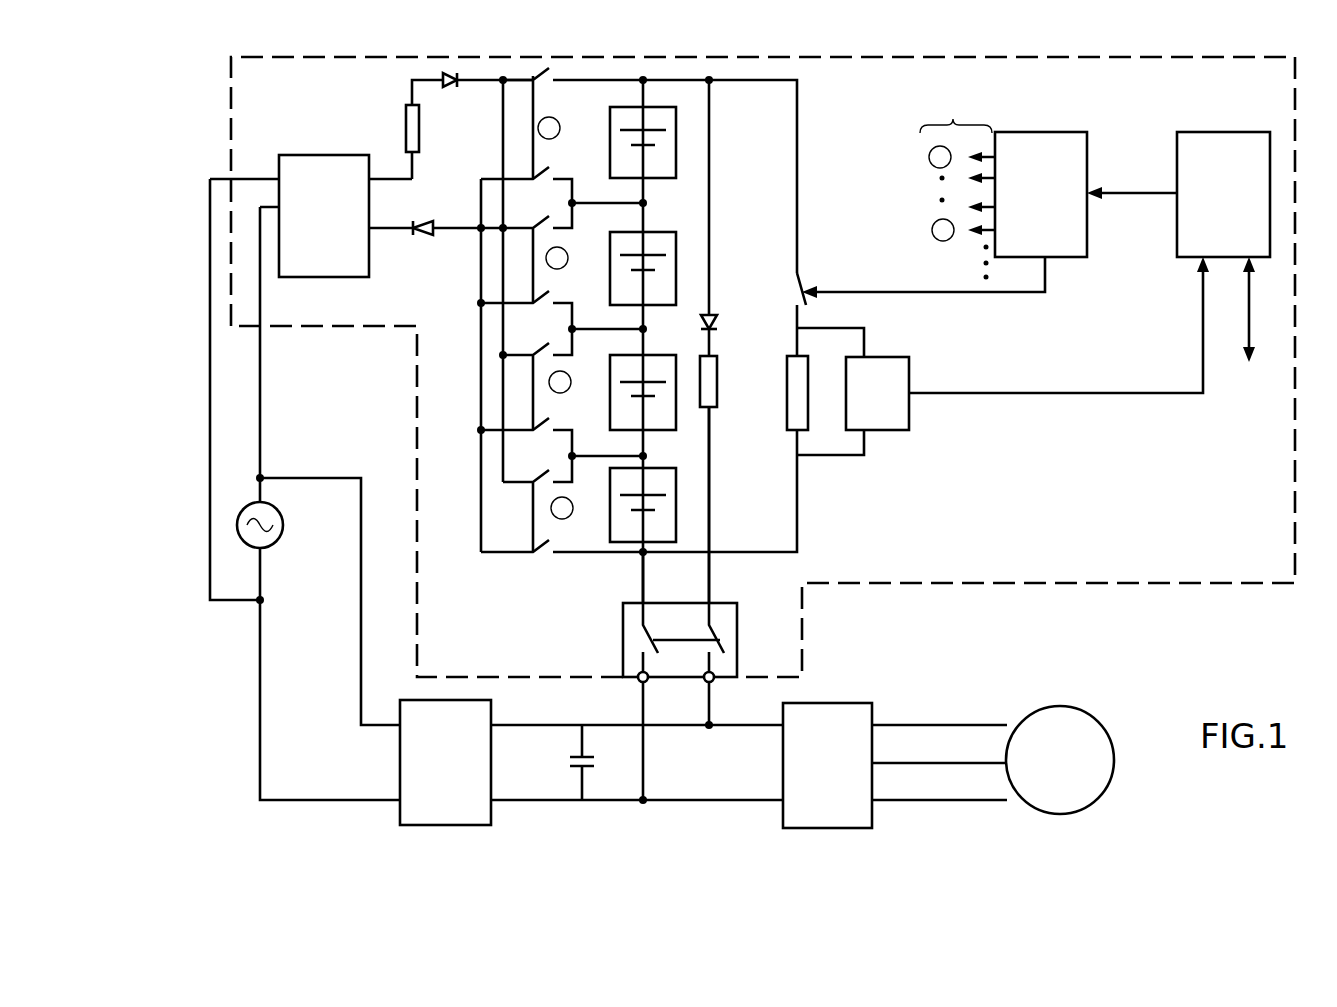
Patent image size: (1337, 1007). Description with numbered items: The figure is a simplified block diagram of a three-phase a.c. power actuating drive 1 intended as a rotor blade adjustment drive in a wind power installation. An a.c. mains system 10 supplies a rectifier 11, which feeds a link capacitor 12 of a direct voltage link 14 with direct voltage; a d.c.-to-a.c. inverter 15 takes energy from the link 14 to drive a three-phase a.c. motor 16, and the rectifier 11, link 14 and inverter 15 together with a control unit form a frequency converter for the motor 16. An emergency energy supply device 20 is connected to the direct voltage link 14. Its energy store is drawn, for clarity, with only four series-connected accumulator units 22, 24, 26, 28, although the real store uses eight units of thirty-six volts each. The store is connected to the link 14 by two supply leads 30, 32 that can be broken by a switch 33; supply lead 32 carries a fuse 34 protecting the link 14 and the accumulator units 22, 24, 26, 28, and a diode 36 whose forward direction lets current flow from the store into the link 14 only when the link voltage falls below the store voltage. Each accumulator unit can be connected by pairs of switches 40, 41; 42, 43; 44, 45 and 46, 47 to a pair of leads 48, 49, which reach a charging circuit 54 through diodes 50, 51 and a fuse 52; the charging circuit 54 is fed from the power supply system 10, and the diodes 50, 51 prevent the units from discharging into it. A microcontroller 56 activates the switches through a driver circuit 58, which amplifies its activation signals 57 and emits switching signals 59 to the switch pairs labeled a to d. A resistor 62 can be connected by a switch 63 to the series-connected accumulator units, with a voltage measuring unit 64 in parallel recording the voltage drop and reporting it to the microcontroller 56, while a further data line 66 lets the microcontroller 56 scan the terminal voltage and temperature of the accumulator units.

The three-phase a.c. power actuating drive 1 is at (1164, 771).
The a.c. mains system 10 is at (276, 541).
The rectifier 11 is at (418, 810).
The link capacitor 12 is at (579, 786).
The direct voltage link 14 is at (550, 817).
The d.c.-to-a.c. inverter 15 is at (805, 830).
The three-phase a.c. motor 16 is at (1115, 741).
The emergency energy supply device 20 is at (1036, 584).
The accumulator unit 22 is at (677, 143).
The accumulator unit 24 is at (677, 262).
The accumulator unit 26 is at (677, 403).
The accumulator unit 28 is at (677, 500).
The supply lead 30 is at (644, 579).
The supply lead 32 is at (710, 577).
The switch 33 is at (623, 642).
The fuse 34 is at (718, 398).
The diode 36 is at (718, 322).
The switch 40 is at (543, 78).
The switch 41 is at (542, 170).
The switch 42 is at (536, 218).
The switch 43 is at (546, 293).
The switch 44 is at (539, 346).
The switch 45 is at (548, 418).
The switch 46 is at (541, 476).
The switch 47 is at (550, 555).
The lead 48 is at (479, 261).
The lead 49 is at (480, 287).
The diode 50 is at (440, 79).
The diode 51 is at (426, 214).
The fuse 52 is at (420, 117).
The charging circuit 54 is at (341, 154).
The microcontroller 56 is at (1220, 131).
The activation signals 57 is at (1131, 196).
The driver circuit 58 is at (1058, 131).
The switching signals 59 is at (957, 185).
The resistor 62 is at (787, 385).
The switch 63 is at (803, 286).
The voltage measuring unit 64 is at (907, 432).
The data line 66 is at (1252, 320).